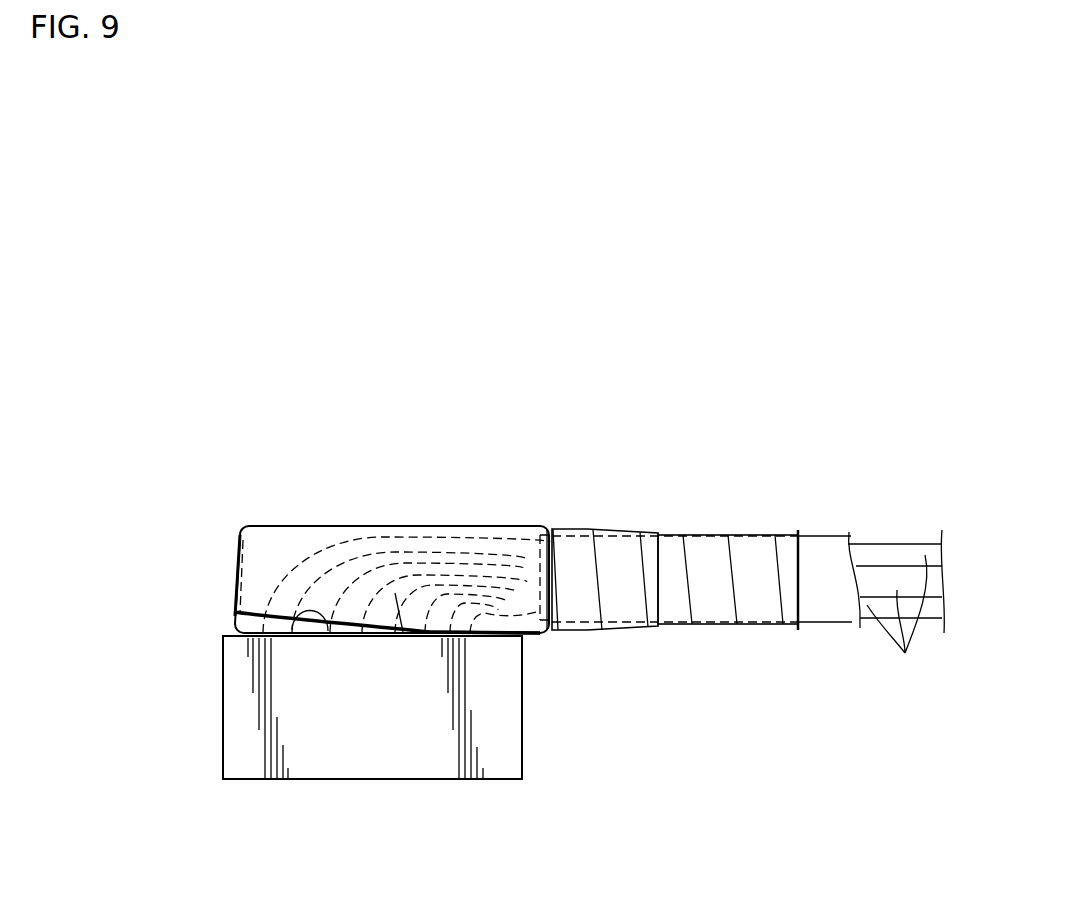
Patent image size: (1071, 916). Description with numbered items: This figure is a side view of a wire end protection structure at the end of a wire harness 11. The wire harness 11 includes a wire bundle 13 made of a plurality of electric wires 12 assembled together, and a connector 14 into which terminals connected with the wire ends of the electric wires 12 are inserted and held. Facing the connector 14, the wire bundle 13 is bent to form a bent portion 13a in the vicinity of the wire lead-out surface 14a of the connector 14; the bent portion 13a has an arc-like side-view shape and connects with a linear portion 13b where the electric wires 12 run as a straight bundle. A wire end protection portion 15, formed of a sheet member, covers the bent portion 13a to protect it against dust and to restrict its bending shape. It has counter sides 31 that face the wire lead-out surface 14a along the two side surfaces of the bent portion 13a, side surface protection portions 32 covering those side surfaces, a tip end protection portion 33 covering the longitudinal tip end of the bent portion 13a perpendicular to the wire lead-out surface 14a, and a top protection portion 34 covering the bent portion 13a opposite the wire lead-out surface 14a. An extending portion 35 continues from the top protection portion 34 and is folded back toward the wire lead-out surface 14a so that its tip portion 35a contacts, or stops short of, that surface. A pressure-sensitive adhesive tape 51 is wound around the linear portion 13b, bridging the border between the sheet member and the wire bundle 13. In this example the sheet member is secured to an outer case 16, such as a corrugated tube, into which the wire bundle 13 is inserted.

The wire harness 11 is at (370, 389).
The electric wires 12 is at (905, 653).
The wire bundle 13 is at (897, 531).
The bent portion 13a is at (403, 537).
The linear portion 13b is at (707, 535).
The connector 14 is at (541, 726).
The wire lead-out surface 14a is at (290, 642).
The wire end protection portion 15 is at (300, 511).
The outer case 16 is at (825, 536).
The counter sides 31 is at (350, 640).
The side surface protection portions 32 is at (260, 562).
The tip end protection portion 33 is at (240, 577).
The top protection portion 34 is at (440, 526).
The extending portion 35 is at (403, 632).
The portion at tip end 35a is at (427, 634).
The pressure-sensitive adhesive tape 51 is at (628, 530).